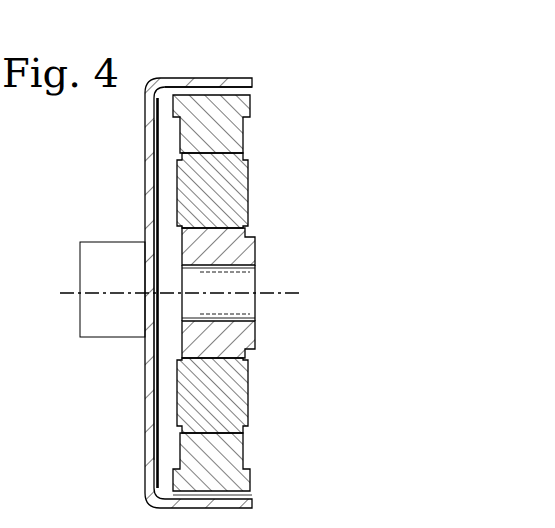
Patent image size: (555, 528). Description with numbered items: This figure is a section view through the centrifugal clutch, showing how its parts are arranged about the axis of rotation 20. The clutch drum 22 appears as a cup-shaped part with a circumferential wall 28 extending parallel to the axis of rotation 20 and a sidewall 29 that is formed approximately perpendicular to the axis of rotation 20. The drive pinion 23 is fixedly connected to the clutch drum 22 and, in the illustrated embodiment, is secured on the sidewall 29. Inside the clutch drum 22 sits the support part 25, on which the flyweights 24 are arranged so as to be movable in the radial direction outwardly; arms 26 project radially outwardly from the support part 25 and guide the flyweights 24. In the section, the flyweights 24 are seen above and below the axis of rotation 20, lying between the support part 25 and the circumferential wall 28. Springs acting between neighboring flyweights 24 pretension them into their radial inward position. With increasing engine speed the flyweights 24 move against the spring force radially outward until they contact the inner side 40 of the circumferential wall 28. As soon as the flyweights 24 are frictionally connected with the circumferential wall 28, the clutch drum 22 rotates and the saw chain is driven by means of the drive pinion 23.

The axis of rotation 20 is at (70, 291).
The clutch drum 22 is at (153, 66).
The drive pinion 23 is at (113, 258).
The flyweights 24 is at (232, 133).
The support part 25 is at (248, 248).
The arms 26 is at (225, 198).
The circumferential wall 28 is at (217, 82).
The sidewall 29 is at (147, 180).
The inner side 40 is at (200, 493).